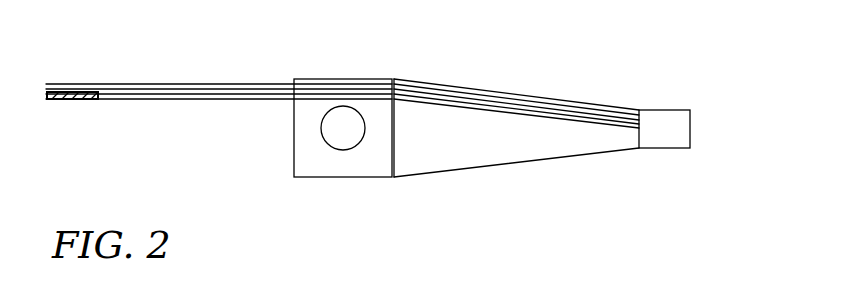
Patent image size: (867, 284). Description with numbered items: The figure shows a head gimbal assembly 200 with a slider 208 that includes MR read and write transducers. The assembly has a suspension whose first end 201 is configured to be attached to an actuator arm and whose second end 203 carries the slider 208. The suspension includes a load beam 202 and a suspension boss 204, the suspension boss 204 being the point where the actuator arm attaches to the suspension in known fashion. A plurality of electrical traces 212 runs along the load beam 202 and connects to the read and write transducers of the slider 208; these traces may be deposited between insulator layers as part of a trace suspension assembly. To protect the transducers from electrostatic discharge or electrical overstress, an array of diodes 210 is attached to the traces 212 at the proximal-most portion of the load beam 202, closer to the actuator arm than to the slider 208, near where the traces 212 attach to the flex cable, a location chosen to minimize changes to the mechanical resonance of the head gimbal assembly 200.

The head gimbal assembly 200 is at (537, 46).
The first end 201 is at (280, 158).
The load beam 202 is at (485, 153).
The second end 203 is at (634, 103).
The suspension boss 204 is at (325, 167).
The slider 208 is at (675, 110).
The array of diodes 210 is at (72, 93).
The electrical traces 212 is at (215, 83).